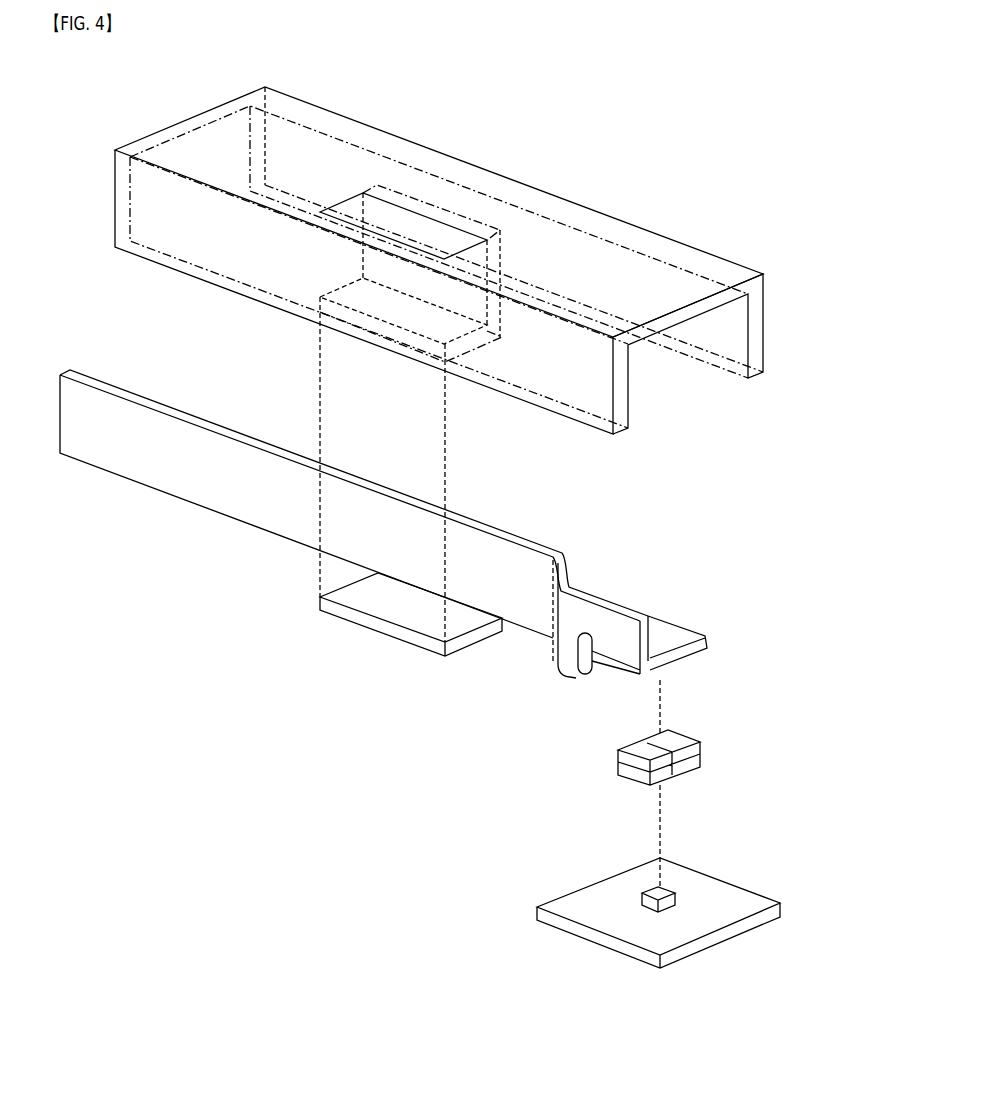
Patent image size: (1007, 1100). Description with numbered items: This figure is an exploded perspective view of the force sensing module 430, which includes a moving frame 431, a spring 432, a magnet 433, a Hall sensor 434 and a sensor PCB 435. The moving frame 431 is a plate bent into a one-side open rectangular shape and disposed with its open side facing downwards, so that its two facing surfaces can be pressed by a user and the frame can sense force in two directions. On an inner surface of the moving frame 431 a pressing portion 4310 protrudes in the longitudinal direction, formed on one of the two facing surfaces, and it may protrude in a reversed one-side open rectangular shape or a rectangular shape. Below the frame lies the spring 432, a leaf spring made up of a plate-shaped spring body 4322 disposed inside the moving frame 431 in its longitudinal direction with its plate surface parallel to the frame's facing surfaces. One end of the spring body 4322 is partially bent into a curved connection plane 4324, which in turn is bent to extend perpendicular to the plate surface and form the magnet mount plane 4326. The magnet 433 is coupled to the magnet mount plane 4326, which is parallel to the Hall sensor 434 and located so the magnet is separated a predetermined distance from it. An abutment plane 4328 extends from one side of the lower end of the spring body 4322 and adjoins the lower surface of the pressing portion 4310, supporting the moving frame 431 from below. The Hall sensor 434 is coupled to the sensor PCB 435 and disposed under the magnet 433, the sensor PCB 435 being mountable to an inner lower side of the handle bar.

The force sensing module 430 is at (792, 109).
The moving frame 431 is at (627, 240).
The pressing portion 4310 is at (350, 284).
The spring 432 is at (487, 769).
The spring body 4322 is at (270, 513).
The connection plane 4324 is at (573, 628).
The magnet mount plane 4326 is at (660, 645).
The abutment plane 4328 is at (405, 620).
The magnet 433 is at (708, 751).
The Hall sensor 434 is at (678, 902).
The sensor PCB 435 is at (783, 908).